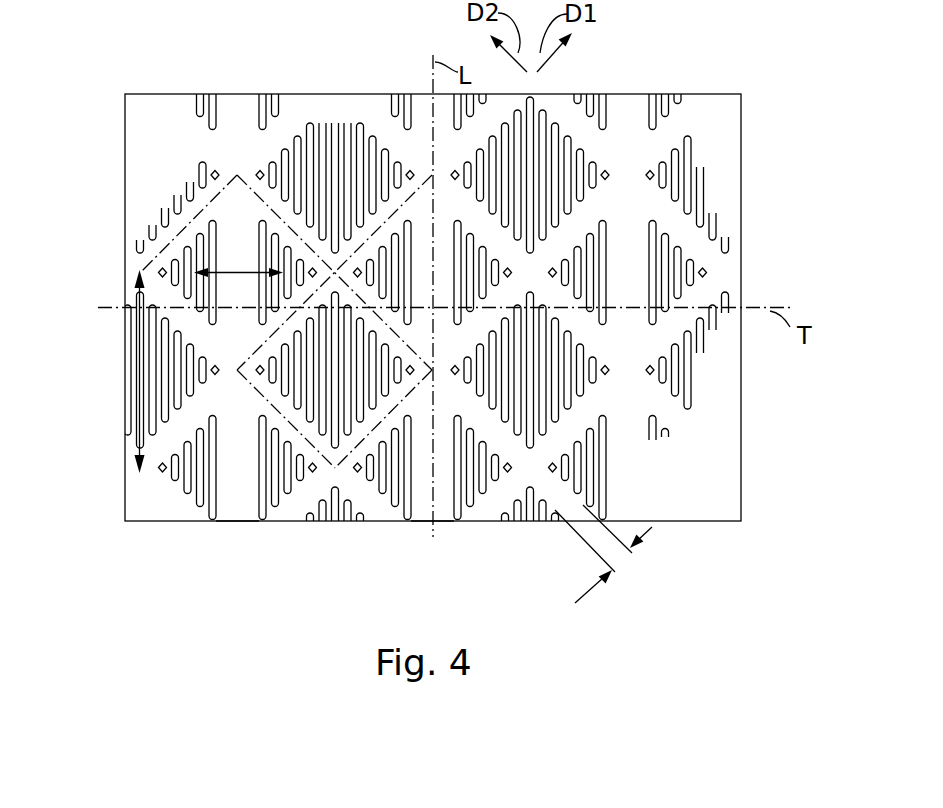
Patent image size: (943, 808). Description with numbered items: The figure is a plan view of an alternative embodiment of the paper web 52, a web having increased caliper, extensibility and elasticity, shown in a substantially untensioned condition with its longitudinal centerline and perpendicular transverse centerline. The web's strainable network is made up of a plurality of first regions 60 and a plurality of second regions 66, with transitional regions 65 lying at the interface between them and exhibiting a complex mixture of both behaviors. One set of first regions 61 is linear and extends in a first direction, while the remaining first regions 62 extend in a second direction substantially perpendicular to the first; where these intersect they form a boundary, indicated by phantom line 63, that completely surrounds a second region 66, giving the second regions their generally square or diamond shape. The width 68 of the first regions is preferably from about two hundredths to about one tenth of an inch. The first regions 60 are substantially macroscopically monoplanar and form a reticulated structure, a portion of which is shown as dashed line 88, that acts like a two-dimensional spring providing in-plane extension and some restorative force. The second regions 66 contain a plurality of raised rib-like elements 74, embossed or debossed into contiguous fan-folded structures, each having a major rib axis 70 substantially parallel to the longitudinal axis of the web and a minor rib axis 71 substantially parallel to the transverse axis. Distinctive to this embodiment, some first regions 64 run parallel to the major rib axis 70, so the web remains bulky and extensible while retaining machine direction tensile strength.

The paper web 52 is at (793, 130).
The first regions 60 is at (215, 152).
The first regions extending in first direction 61 is at (158, 452).
The first regions extending in second direction 62 is at (213, 155).
The phantom line boundary 63 is at (322, 457).
The first regions parallel to major rib axis 64 is at (238, 507).
The transitional regions 65 is at (670, 145).
The second regions 66 is at (658, 228).
The width of first regions 68 is at (588, 594).
The major rib axis 70 is at (138, 369).
The minor rib axis 71 is at (237, 272).
The rib-like elements 74 is at (655, 243).
The reticulated structure 88 is at (205, 203).